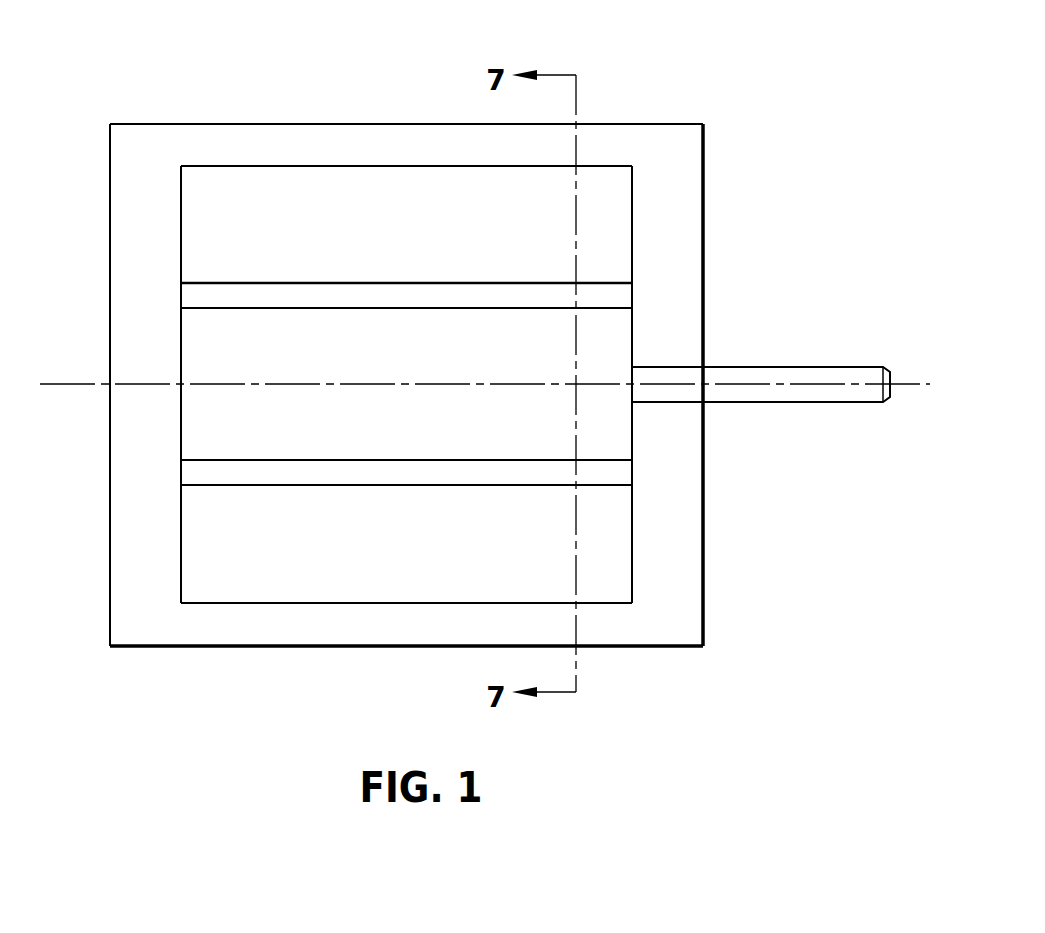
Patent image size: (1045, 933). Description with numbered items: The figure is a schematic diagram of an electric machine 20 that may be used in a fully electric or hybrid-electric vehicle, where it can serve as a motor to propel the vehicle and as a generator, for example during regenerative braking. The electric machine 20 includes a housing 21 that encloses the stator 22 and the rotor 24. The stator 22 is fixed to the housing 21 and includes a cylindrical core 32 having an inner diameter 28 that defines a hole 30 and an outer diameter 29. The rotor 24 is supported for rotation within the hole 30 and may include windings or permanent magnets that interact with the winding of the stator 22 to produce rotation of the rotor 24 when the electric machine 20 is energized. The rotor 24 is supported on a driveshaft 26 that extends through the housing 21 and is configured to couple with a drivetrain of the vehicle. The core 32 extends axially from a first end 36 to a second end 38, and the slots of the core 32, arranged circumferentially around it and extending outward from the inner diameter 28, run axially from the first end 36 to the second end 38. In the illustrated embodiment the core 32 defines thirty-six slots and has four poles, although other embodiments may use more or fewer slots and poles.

The electric machine 20 is at (687, 77).
The housing 21 is at (407, 124).
The stator 22 is at (280, 166).
The rotor 24 is at (180, 351).
The driveshaft 26 is at (768, 365).
The inner diameter 28 is at (598, 283).
The outer diameter 29 is at (272, 603).
The hole 30 is at (673, 469).
The cylindrical core 32 is at (632, 225).
The first end 36 is at (180, 232).
The second end 38 is at (632, 539).